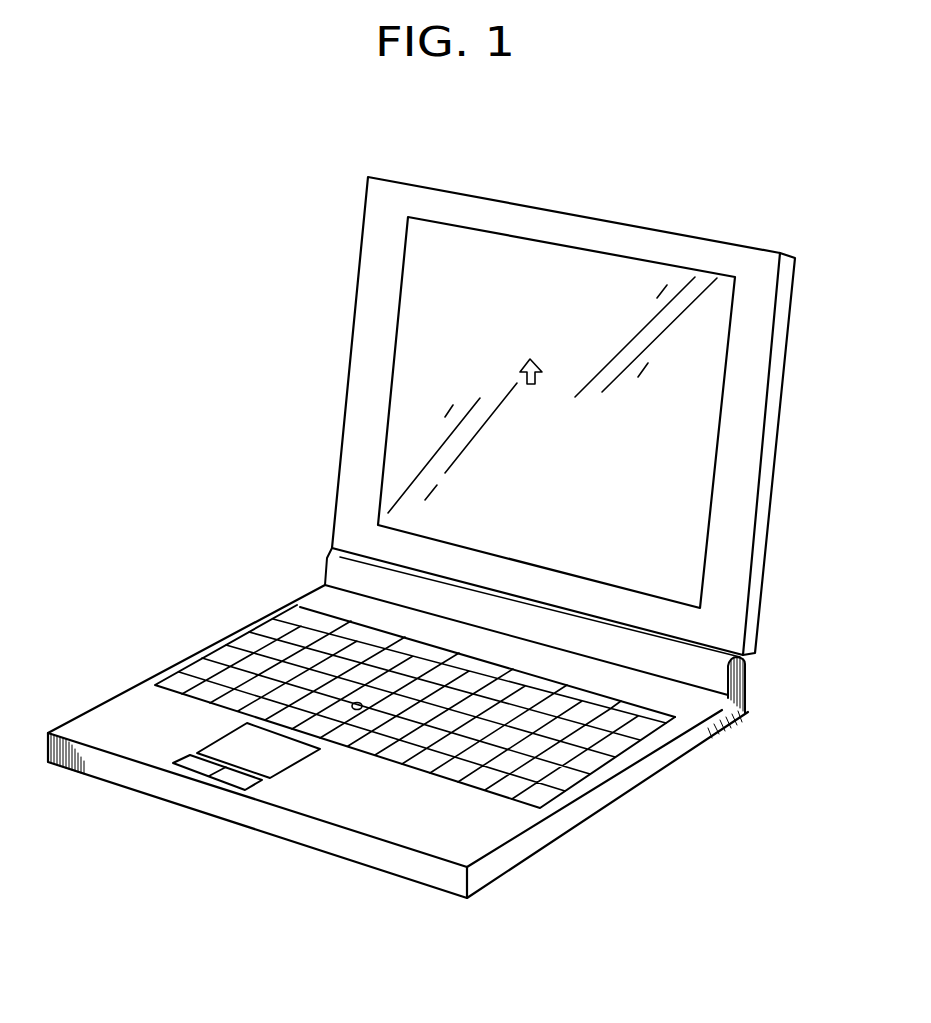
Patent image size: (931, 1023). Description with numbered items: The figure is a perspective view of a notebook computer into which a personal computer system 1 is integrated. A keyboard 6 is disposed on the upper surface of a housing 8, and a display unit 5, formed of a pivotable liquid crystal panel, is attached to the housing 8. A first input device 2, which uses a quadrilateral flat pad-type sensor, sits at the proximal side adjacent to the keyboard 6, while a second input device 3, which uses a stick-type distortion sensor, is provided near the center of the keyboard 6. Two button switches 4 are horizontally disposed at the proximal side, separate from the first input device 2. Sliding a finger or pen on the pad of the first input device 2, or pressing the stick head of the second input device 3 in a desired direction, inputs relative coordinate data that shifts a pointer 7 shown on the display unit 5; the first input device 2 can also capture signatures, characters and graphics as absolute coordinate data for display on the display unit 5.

The personal computer system 1 is at (293, 773).
The first input device 2 is at (272, 763).
The second input device 3 is at (353, 704).
The button switches 4 is at (240, 777).
The display unit 5 is at (632, 488).
The keyboard 6 is at (647, 708).
The pointer 7 is at (525, 380).
The housing 8 is at (590, 798).